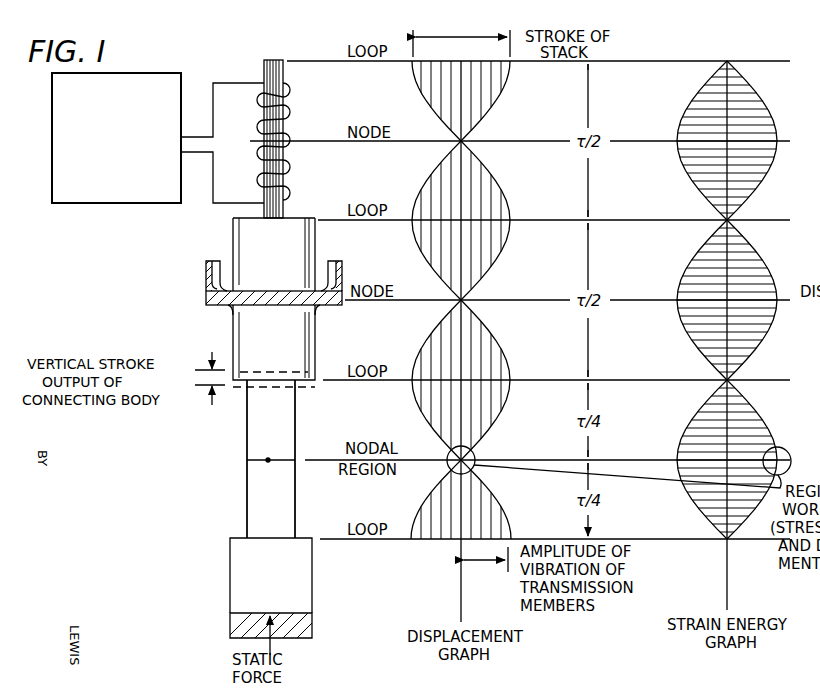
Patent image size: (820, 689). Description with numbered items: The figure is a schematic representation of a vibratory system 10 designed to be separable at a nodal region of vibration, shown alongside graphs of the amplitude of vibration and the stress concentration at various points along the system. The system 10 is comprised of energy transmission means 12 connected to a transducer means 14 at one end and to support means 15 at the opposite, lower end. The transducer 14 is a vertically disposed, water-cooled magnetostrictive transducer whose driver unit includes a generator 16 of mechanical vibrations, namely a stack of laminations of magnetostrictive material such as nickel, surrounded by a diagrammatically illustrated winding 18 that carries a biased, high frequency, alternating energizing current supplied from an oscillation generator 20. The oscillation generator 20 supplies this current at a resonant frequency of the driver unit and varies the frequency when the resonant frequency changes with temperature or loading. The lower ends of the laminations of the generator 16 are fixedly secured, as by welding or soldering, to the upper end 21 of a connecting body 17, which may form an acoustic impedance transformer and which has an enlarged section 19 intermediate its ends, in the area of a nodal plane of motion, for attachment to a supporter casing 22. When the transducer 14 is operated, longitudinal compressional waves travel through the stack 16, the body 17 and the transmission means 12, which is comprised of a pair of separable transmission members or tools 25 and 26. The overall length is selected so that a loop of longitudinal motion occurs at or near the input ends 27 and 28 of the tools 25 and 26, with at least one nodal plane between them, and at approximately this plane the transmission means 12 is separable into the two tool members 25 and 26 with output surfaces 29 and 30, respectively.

The vibratory system 10 is at (166, 287).
The energy transmission means 12 is at (245, 507).
The transducer means 14 is at (248, 232).
The support means 15 is at (228, 625).
The generator of mechanical vibrations 16 is at (284, 70).
The connecting body 17 is at (313, 236).
The winding 18 is at (290, 112).
The enlarged section 19 is at (208, 300).
The oscillation generator 20 is at (190, 66).
The upper end of the connecting body 21 is at (312, 204).
The supporter casing 22 is at (341, 264).
The transmission member or tool 25 is at (296, 400).
The transmission member or tool 26 is at (290, 505).
The input end 27 is at (283, 373).
The input end 28 is at (258, 539).
The output surface 29 is at (255, 462).
The output surface 30 is at (278, 454).